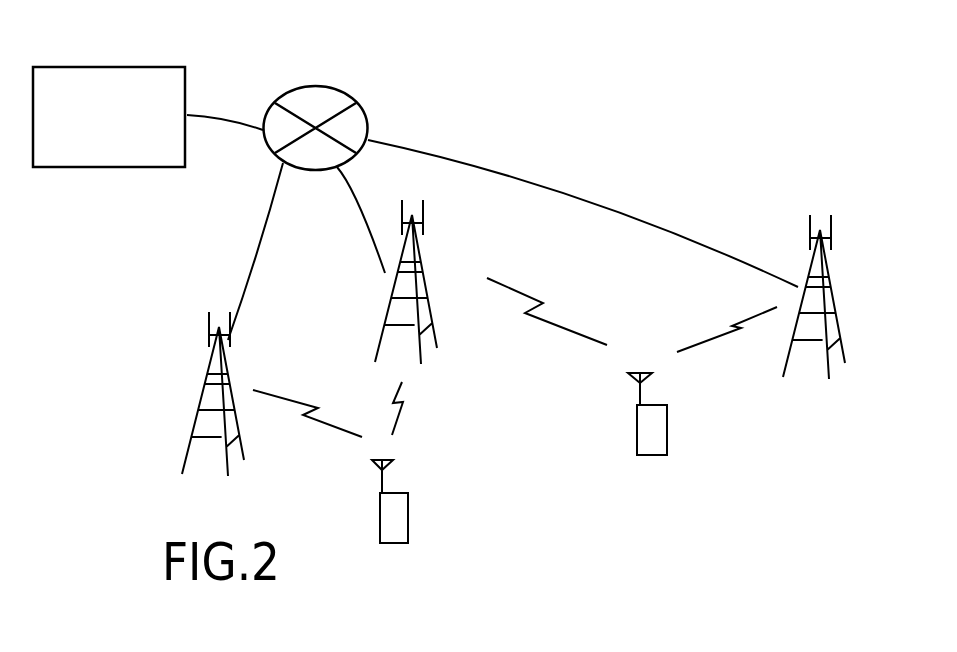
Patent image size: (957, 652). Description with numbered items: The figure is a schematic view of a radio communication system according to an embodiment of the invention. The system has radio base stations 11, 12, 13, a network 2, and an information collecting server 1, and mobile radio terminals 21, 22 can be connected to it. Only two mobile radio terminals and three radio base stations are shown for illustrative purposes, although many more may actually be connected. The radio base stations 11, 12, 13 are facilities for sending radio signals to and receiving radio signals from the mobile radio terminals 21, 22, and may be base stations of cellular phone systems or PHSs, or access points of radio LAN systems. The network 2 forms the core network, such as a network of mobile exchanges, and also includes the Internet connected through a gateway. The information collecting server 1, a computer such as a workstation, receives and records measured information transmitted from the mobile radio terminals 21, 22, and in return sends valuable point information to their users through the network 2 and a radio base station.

The information collecting server 1 is at (130, 66).
The network 2 is at (366, 120).
The radio base station 11 is at (203, 383).
The radio base station 12 is at (423, 225).
The radio base station 13 is at (832, 267).
The mobile radio terminal 21 is at (408, 507).
The mobile radio terminal 22 is at (667, 420).